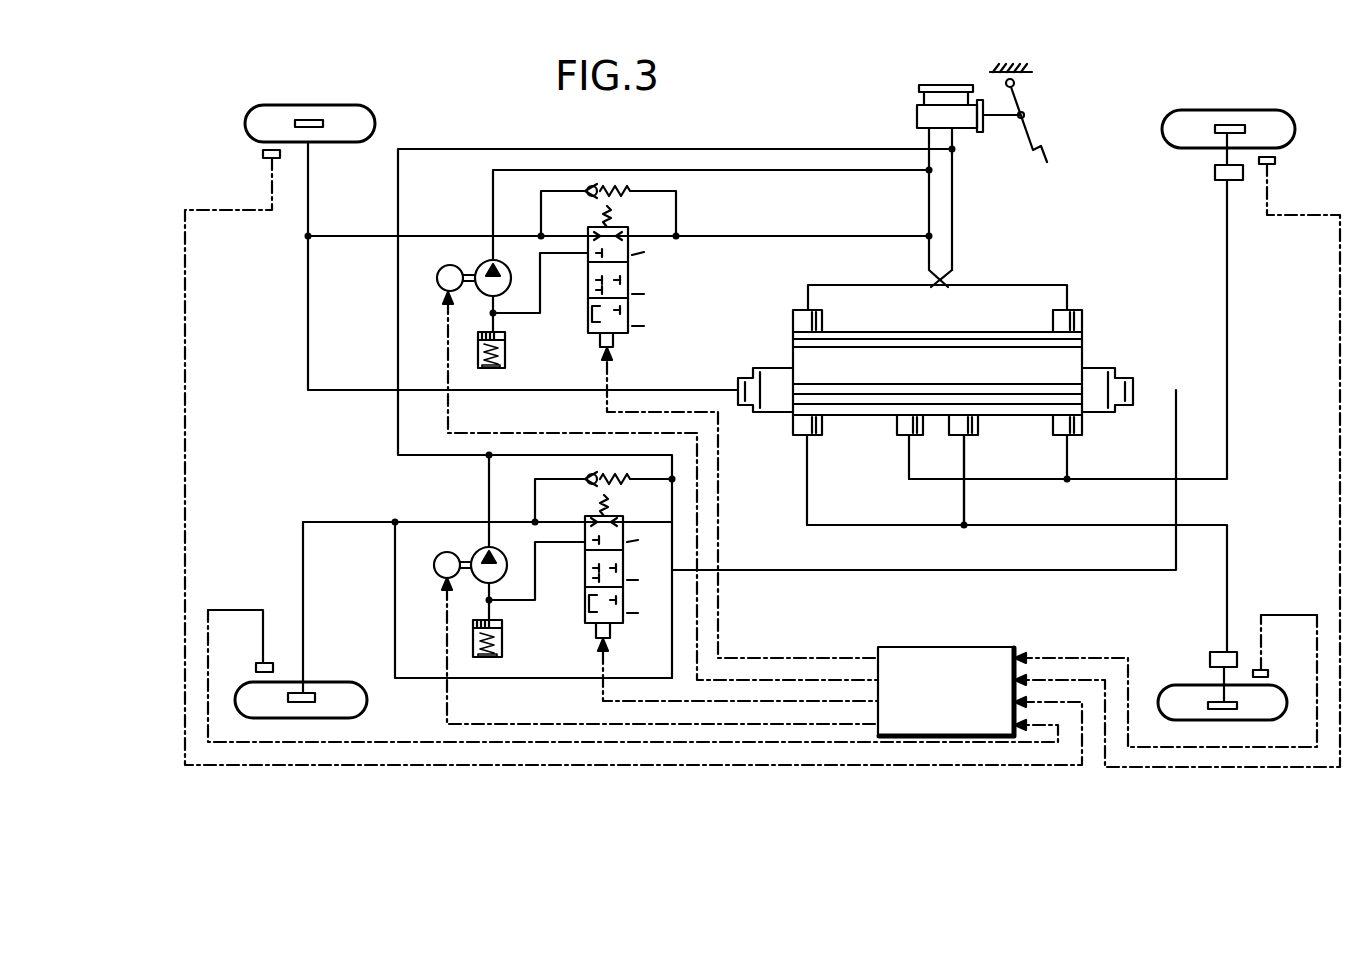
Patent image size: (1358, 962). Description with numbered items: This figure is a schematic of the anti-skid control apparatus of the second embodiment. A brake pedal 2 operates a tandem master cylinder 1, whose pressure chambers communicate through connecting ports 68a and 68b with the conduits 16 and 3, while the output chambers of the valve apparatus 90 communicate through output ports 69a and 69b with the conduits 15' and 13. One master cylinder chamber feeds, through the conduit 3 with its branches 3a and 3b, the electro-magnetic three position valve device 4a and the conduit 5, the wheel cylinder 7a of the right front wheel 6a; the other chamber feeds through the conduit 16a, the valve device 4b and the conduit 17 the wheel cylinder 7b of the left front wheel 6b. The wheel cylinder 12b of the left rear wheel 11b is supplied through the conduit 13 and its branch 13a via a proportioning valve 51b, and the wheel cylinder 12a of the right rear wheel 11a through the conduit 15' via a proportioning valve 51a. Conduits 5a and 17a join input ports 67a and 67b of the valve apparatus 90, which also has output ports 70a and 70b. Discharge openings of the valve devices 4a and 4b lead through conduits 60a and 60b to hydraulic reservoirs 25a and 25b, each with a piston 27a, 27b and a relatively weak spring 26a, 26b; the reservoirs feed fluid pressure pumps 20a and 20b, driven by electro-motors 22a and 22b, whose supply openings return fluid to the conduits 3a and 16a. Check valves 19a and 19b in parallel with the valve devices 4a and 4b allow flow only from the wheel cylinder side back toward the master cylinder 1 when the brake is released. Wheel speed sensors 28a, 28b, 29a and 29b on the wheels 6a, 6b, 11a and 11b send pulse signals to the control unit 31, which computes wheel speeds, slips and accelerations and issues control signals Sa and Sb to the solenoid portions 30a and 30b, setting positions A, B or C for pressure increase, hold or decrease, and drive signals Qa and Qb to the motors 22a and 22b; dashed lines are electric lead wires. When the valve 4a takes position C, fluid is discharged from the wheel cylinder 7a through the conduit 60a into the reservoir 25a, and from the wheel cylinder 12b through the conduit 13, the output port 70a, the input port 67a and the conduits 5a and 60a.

The tandem master cylinder 1 is at (923, 90).
The brake pedal 2 is at (1032, 132).
The conduit 3 is at (926, 203).
The conduit 3a is at (770, 172).
The fluid passage 3b is at (770, 238).
The electro-magnetic three position valve device 4a is at (630, 275).
The electro-magnetic three position valve device 4b is at (626, 560).
The conduit 5 is at (440, 234).
The conduit 5a is at (347, 392).
The right front wheel 6a is at (345, 108).
The left front wheel 6b is at (343, 686).
The wheel cylinder 7a is at (307, 118).
The wheel cylinder 7b is at (308, 692).
The right rear wheel 11a is at (1184, 118).
The left rear wheel 11b is at (1170, 705).
The wheel cylinder 12a is at (1230, 124).
The wheel cylinder 12b is at (1225, 710).
The conduit 13 is at (1230, 560).
The brake line 13a is at (968, 508).
The conduit 15' is at (1093, 329).
The conduit 16 is at (955, 205).
The conduit 16a is at (396, 438).
The conduit 17 is at (447, 520).
The conduit 17a is at (740, 568).
The check valve 19a is at (632, 188).
The check valve 19b is at (584, 476).
The fluid pressure pump 20a is at (480, 266).
The fluid pressure pump 20b is at (476, 553).
The electro-motor 22a is at (440, 285).
The electro-motor 22b is at (436, 572).
The hydraulic reservoir 25a is at (472, 360).
The hydraulic reservoir 25b is at (467, 647).
The spring 26a is at (483, 354).
The spring 26b is at (479, 641).
The piston 27a is at (476, 336).
The piston 27b is at (471, 624).
The wheel speed sensor 28a is at (262, 154).
The wheel speed sensor 28b is at (256, 667).
The wheel speed sensor 29a is at (1277, 163).
The wheel speed sensor 29b is at (1268, 670).
The solenoid portion 30a is at (616, 342).
The solenoid portion 30b is at (612, 640).
The control unit 31 is at (942, 646).
The proportioning valve 51a is at (1214, 172).
The proportioning valve 51b is at (1209, 657).
The conduit 60a is at (542, 310).
The conduit 60b is at (542, 598).
The input port 67a is at (737, 386).
The input port 67b is at (1136, 386).
The connecting port 68a is at (806, 310).
The connecting port 68b is at (1072, 310).
The output port 69a is at (906, 438).
The output port 69b is at (968, 438).
The output port 70a is at (803, 438).
The master cylinder port 70b is at (1070, 438).
The valve apparatus 90 is at (947, 404).
The drive signal Qa is at (451, 420).
The drive signal Qb is at (449, 712).
The control signal Sa is at (604, 410).
The control signal Sb is at (600, 700).